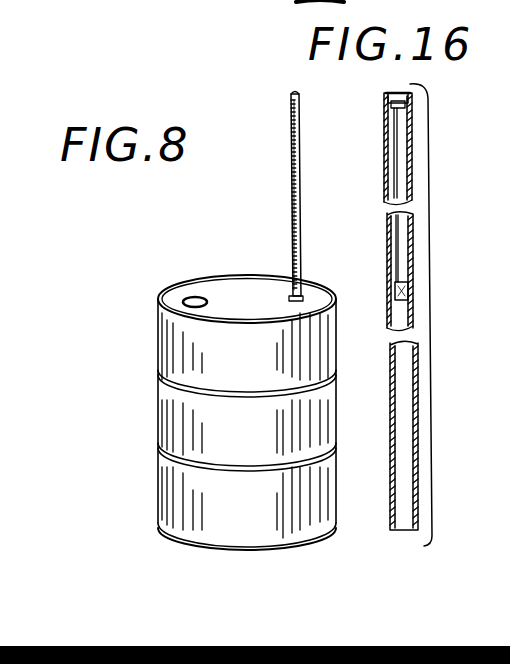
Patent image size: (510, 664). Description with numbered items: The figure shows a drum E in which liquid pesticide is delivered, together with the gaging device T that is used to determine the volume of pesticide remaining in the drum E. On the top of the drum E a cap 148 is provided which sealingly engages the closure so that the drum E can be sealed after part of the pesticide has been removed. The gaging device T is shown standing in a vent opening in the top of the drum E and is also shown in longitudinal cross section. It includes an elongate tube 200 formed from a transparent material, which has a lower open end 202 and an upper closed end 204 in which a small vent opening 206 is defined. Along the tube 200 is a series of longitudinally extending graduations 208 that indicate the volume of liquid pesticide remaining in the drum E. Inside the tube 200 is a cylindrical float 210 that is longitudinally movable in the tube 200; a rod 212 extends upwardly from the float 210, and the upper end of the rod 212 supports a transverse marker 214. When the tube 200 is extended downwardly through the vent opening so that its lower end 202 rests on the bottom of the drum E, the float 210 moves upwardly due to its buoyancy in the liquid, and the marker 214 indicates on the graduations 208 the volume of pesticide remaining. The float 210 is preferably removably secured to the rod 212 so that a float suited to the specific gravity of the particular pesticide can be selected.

In FIG. 8, the drum E is at (338, 350).
In FIG. 8, the cap 148 is at (207, 301).
In FIG. 8, the graduations 208 is at (300, 226).
In FIG. 8, the gaging device T is at (301, 152).
In FIG. 16, the gaging device T is at (385, 168).
In FIG. 16, the elongate tube 200 is at (414, 180).
In FIG. 16, the lower open end 202 is at (417, 546).
In FIG. 16, the upper closed end 204 is at (414, 92).
In FIG. 16, the vent opening 206 is at (390, 93).
In FIG. 16, the cylindrical float 210 is at (405, 291).
In FIG. 16, the rod 212 is at (410, 233).
In FIG. 16, the transverse marker 214 is at (412, 113).